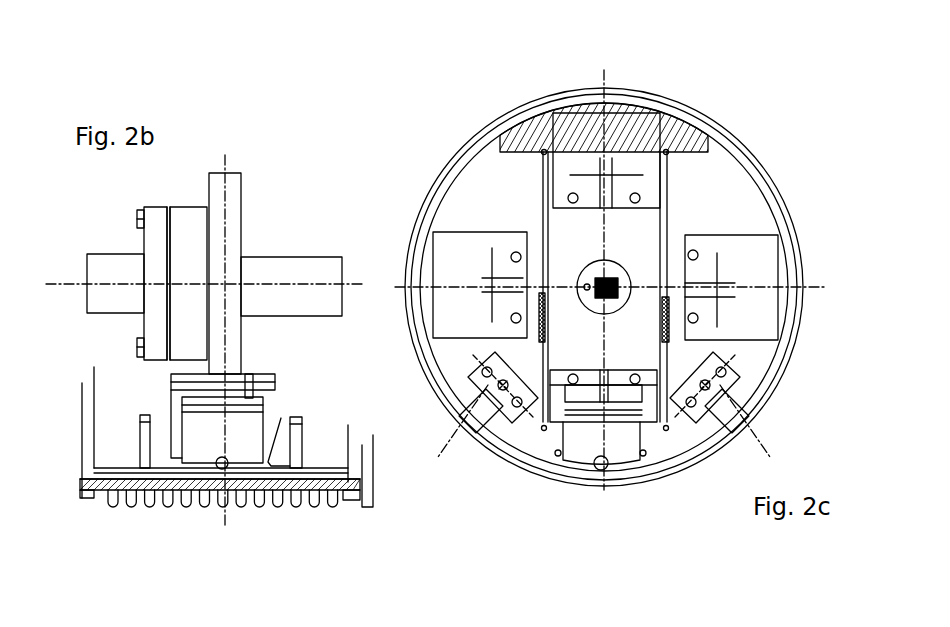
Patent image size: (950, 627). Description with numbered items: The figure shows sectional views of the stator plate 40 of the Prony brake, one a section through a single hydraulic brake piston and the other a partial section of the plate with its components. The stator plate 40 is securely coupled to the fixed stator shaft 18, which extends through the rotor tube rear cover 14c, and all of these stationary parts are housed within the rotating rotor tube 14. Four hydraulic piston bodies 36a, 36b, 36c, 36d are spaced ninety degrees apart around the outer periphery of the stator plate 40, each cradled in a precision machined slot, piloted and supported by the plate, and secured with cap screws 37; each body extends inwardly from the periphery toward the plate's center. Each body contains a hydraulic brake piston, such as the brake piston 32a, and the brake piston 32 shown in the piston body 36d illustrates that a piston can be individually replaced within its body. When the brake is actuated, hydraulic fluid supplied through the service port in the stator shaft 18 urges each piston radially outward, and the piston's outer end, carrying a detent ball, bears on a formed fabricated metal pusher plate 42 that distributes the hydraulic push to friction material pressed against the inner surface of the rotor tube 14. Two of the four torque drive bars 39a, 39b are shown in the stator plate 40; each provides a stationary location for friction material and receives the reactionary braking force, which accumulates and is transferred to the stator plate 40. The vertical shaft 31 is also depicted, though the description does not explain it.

In FIG. 2b, the rotor tube 14 is at (118, 502).
In FIG. 2b, the rotor tube rear cover 14c is at (365, 475).
In FIG. 2b, the stator shaft 18 is at (123, 270).
In FIG. 2b, the vertical shaft 31 is at (230, 317).
In FIG. 2c, the hydraulic brake piston 32 is at (582, 450).
In FIG. 2b, the hydraulic brake piston 32a is at (237, 443).
In FIG. 2b, the hydraulic piston body 36a is at (173, 410).
In FIG. 2c, the hydraulic piston body 36a is at (477, 230).
In FIG. 2c, the hydraulic piston body 36b is at (663, 175).
In FIG. 2c, the hydraulic piston body 36c is at (764, 267).
In FIG. 2c, the hydraulic piston body 36d is at (543, 432).
In FIG. 2c, the cap screws 37 is at (698, 318).
In FIG. 2c, the torque drive bar 39a is at (460, 398).
In FIG. 2c, the torque drive bar 39b is at (722, 390).
In FIG. 2c, the stator plate 40 is at (494, 202).
In FIG. 2b, the pusher plate 42 is at (138, 440).
In FIG. 2c, the pusher plate 42 is at (592, 130).